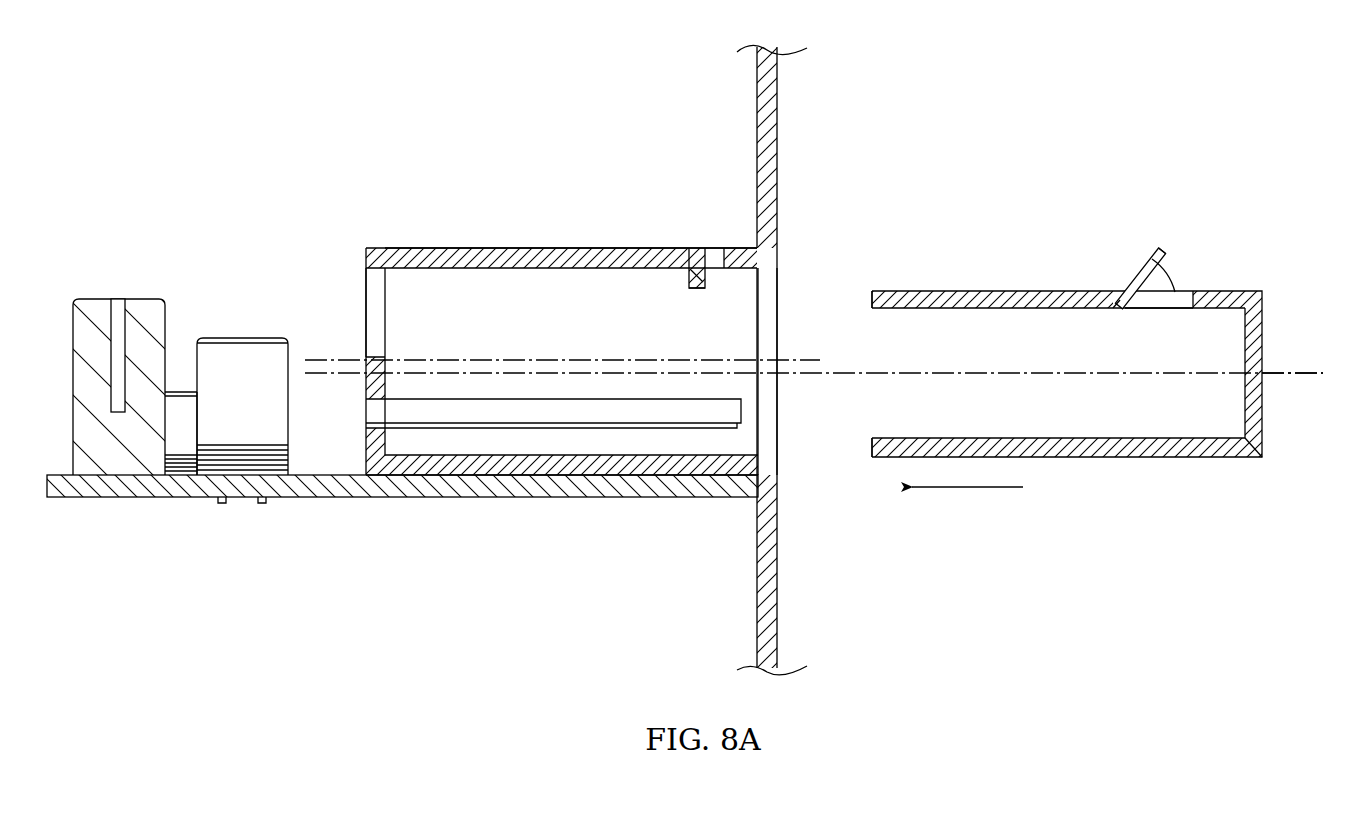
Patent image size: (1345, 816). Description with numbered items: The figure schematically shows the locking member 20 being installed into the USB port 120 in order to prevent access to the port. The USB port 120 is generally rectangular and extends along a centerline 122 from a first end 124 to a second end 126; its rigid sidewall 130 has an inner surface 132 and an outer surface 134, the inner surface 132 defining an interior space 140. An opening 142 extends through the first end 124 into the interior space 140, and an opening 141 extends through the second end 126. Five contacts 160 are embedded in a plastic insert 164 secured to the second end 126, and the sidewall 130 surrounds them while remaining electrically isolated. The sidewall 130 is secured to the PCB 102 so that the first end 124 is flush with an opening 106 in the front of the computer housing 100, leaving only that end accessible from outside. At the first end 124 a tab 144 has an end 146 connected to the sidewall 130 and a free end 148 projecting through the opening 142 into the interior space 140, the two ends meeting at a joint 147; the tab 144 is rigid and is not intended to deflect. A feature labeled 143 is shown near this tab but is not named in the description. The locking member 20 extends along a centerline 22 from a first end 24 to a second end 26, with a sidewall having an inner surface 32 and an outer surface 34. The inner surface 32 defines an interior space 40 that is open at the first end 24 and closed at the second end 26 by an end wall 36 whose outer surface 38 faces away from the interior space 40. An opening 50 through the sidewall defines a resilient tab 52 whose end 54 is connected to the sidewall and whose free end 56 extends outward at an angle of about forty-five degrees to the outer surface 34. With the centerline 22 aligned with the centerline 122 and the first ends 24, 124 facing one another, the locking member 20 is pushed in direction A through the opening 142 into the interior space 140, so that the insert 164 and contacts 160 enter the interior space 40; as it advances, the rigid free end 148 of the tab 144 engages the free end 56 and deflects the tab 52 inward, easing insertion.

The locking member 20 is at (898, 275).
The centerline 22 is at (1310, 375).
The first end 24 is at (866, 472).
The second end 26 is at (1268, 477).
The inner surface 32 is at (1012, 309).
The outer surface 34 is at (980, 290).
The end wall 36 is at (1257, 330).
The outer surface 38 is at (1258, 428).
The interior space 40 is at (1072, 415).
The opening 50 is at (1145, 310).
The tab 52 is at (1143, 258).
The end 54 is at (1117, 290).
The free end 56 is at (1160, 250).
The computer housing 100 is at (778, 160).
The PCB 102 is at (410, 497).
The opening 106 is at (788, 297).
The USB port 120 is at (474, 229).
The centerline 122 is at (346, 374).
The first end 124 is at (740, 212).
The second end 126 is at (350, 243).
The sidewall 130 is at (419, 256).
The inner surface 132 is at (553, 268).
The outer surface 134 is at (571, 248).
The interior space 140 is at (405, 297).
The opening 141 is at (362, 322).
The opening 142 is at (788, 410).
The slot 143 is at (718, 266).
The tab 144 is at (700, 246).
The end 146 is at (692, 252).
The joint 147 is at (704, 288).
The free end 148 is at (690, 280).
The contacts 160 is at (558, 424).
The insert 164 is at (658, 416).